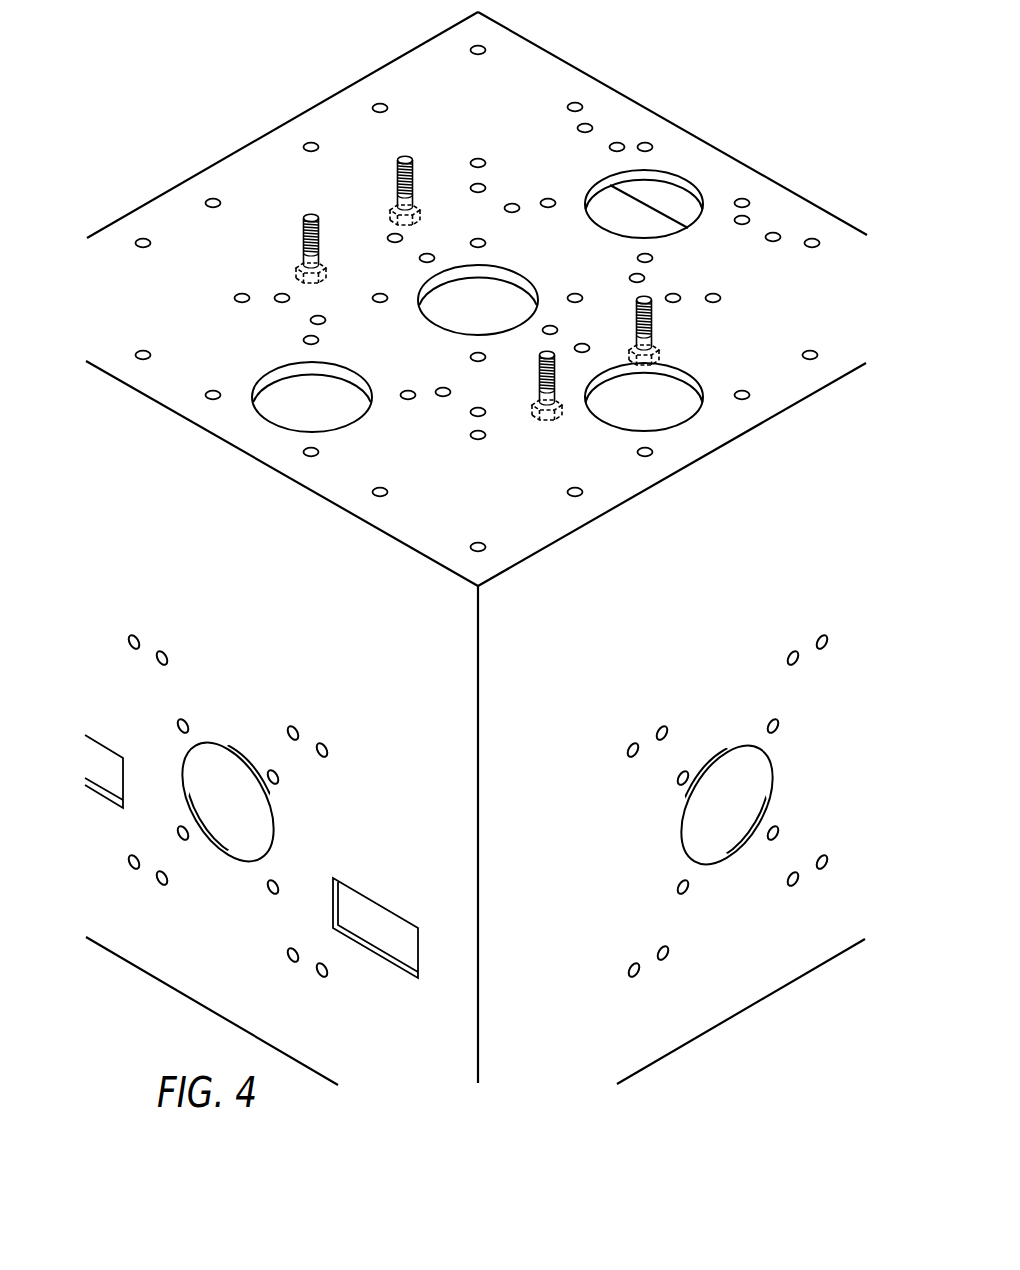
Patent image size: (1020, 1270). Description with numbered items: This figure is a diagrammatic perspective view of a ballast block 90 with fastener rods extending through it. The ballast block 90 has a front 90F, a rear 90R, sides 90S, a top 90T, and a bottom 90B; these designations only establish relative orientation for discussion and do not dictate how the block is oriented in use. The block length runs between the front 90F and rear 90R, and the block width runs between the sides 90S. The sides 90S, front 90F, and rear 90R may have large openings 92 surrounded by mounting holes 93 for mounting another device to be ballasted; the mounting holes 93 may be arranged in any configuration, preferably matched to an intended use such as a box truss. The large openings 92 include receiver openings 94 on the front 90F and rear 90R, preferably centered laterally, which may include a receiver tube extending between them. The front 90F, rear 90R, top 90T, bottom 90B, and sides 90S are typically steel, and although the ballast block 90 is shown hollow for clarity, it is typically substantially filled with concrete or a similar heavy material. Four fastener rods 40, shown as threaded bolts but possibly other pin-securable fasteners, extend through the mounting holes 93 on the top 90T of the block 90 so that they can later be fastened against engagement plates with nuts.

The ballast block 90 is at (562, 58).
The top 90T is at (260, 163).
The rear 90R is at (707, 138).
The sides 90S is at (162, 192).
The front 90F is at (168, 957).
The bottom 90B is at (713, 1030).
The fastener rods 40 is at (314, 216).
The mounting holes 93 is at (320, 263).
The receiver openings 94 is at (102, 745).
The large openings 92 is at (728, 868).